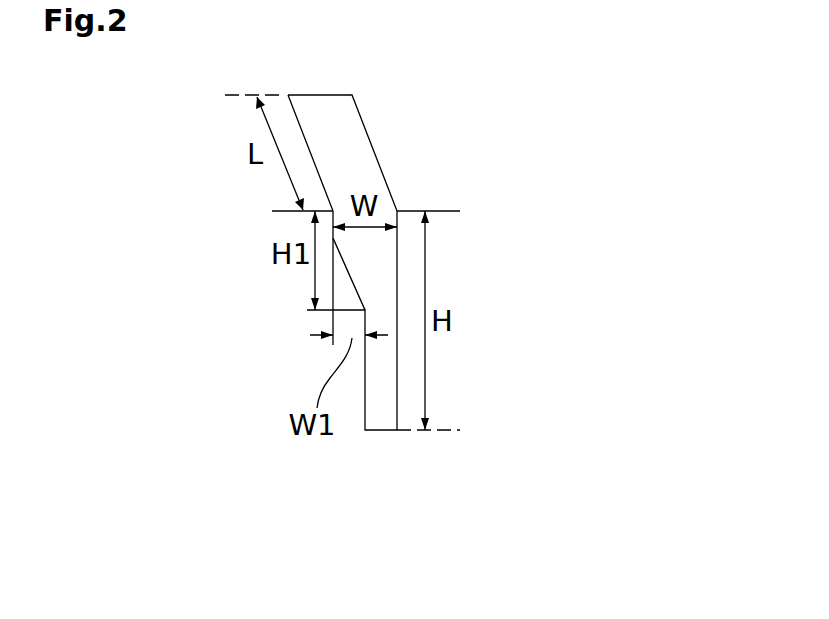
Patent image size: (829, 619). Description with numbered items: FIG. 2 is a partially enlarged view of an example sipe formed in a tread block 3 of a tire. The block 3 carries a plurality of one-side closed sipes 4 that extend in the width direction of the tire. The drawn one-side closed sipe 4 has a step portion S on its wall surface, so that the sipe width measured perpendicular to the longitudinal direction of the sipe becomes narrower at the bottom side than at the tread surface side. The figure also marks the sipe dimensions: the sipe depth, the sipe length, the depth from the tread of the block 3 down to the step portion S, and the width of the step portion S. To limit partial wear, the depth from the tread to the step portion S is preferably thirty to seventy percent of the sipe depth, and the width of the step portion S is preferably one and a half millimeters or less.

The block 3 is at (423, 142).
The one-side closed sipe 4 is at (382, 408).
The step portion S is at (350, 300).